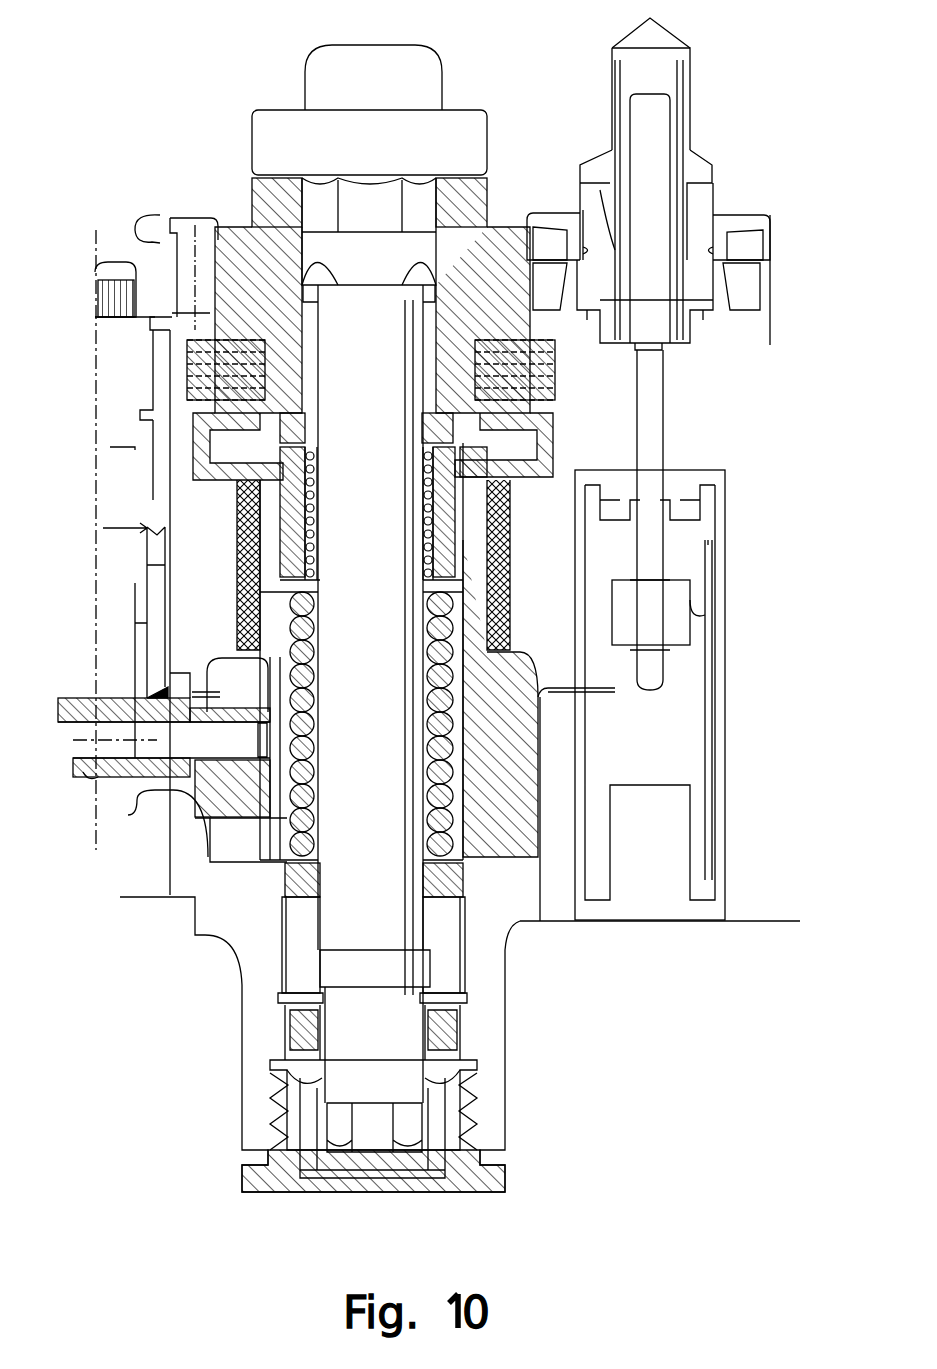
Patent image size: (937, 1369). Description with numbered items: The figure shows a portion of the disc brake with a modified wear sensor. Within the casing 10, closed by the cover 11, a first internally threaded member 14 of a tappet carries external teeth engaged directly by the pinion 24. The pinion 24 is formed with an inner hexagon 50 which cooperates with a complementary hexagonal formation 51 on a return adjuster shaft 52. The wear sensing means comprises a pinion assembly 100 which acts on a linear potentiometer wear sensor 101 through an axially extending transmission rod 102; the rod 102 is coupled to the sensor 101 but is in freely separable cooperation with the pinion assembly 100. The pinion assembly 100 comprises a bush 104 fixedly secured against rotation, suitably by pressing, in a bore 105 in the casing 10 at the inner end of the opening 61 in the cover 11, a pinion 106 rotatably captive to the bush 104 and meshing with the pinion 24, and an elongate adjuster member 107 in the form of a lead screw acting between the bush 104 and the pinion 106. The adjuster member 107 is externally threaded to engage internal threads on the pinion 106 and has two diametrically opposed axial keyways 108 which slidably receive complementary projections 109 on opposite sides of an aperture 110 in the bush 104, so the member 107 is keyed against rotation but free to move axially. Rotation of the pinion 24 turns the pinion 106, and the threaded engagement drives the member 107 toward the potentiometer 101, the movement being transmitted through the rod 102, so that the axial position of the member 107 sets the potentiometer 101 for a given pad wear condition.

The casing 10 is at (790, 270).
The cover 11 is at (550, 900).
The first internally threaded member 14 is at (153, 236).
The pinion 24 is at (245, 248).
The inner hexagon 50 is at (318, 195).
The hexagonal formation 51 is at (415, 262).
The return adjuster shaft 52 is at (395, 1075).
The opening 61 is at (725, 617).
The pinion assembly 100 is at (686, 178).
The linear potentiometer wear sensor 101 is at (690, 755).
The rod 102 is at (648, 430).
The bush 104 is at (695, 192).
The bore 105 is at (586, 196).
The pinion 106 is at (705, 295).
The adjuster member 107 is at (650, 130).
The keyways 108 is at (620, 125).
The projections 109 is at (620, 230).
The aperture 110 is at (632, 248).